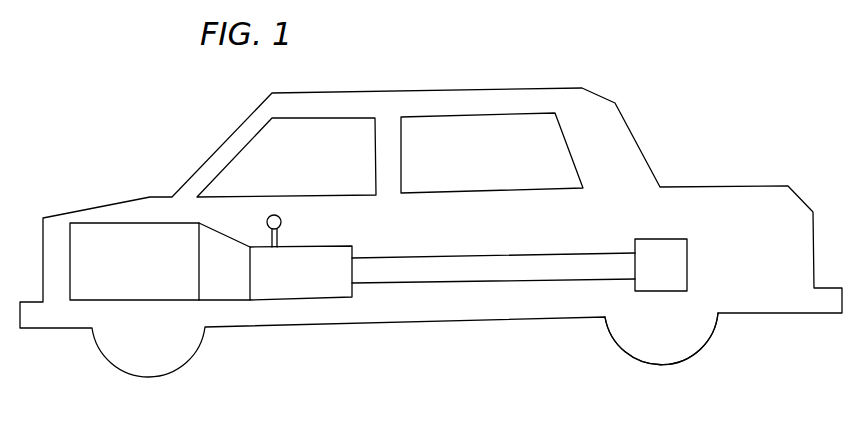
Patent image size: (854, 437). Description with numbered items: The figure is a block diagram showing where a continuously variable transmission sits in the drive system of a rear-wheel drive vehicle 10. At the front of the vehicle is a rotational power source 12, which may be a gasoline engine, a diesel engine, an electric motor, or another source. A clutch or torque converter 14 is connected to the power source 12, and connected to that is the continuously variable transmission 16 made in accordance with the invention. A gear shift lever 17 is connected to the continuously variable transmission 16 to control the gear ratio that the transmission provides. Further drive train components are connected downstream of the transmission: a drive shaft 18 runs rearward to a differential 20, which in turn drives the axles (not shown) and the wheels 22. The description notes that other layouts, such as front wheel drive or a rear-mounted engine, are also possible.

The rear-wheel drive vehicle 10 is at (673, 123).
The rotational power source 12 is at (115, 255).
The clutch or torque converter 14 is at (223, 277).
The continuously variable transmission 16 is at (305, 272).
The gear shift lever 17 is at (267, 213).
The drive shaft 18 is at (458, 268).
The differential 20 is at (661, 265).
The wheels 22 is at (695, 335).